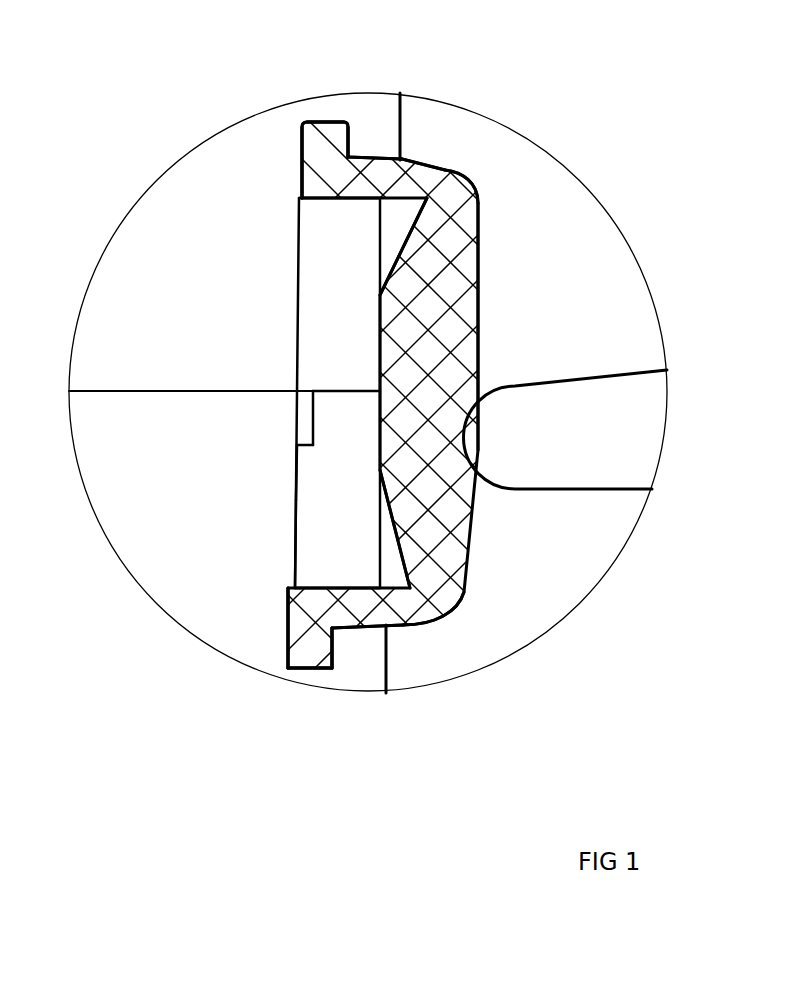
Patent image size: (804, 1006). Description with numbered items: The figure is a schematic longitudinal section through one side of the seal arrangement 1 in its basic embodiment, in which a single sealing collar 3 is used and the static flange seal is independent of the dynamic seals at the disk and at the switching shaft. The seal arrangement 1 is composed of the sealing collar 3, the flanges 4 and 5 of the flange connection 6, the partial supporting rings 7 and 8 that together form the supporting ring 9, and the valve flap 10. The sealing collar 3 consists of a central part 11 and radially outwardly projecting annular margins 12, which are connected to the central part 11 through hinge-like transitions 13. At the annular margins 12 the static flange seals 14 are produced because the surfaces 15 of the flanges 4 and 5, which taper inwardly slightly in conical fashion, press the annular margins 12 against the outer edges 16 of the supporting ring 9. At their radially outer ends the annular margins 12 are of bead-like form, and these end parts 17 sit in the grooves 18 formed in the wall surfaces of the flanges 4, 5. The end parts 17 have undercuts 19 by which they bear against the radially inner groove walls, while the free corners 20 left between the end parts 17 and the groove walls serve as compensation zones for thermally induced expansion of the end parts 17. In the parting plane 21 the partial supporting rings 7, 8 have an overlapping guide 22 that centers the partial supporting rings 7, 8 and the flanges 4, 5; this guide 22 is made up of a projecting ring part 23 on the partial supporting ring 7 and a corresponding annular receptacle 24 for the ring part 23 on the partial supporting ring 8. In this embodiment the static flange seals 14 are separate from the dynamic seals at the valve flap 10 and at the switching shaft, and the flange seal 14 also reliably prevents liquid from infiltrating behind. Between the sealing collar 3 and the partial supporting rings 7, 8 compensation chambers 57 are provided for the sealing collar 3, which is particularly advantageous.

The seal arrangement 1 is at (223, 140).
The sealing collar 3 is at (481, 307).
The flange 4 is at (220, 190).
The flange 5 is at (228, 527).
The flange connection 6 is at (153, 608).
The partial supporting ring 7 is at (325, 250).
The partial supporting ring 8 is at (317, 517).
The supporting ring 9 is at (292, 475).
The valve flap 10 is at (578, 473).
The central part 11 is at (457, 352).
The annular margin 12 is at (300, 175).
The hinge-like transition 13 is at (428, 182).
The static flange seal 14 is at (445, 176).
The surface 15 is at (400, 145).
The outer edge 16 is at (330, 160).
The end part 17 is at (300, 175).
The groove 18 is at (312, 125).
The undercut 19 is at (350, 157).
The free corner 20 is at (305, 135).
The parting plane 21 is at (370, 391).
The overlapping guide 22 is at (313, 432).
The projecting ring part 23 is at (308, 413).
The annular receptacle 24 is at (305, 452).
The compensation chamber 57 is at (398, 233).